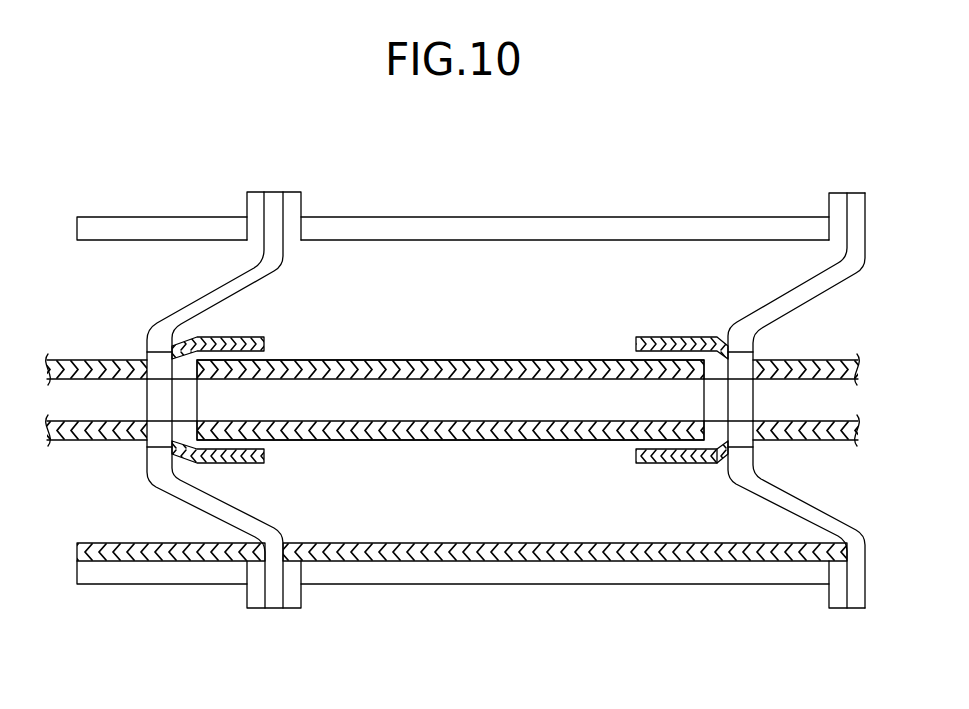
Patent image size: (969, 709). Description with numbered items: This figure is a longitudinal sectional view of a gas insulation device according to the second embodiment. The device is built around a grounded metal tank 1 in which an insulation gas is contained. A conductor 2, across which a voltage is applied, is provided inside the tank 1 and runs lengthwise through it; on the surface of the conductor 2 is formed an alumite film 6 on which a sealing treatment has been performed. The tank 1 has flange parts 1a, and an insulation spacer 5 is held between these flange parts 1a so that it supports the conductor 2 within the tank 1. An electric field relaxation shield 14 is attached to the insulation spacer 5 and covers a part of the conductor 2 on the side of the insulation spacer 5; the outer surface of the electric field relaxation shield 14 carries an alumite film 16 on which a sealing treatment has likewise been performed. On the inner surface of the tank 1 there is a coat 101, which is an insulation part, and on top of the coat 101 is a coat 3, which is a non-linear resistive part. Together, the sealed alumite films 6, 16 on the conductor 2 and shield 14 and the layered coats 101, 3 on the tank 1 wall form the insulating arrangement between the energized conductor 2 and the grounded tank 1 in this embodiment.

The grounded metal tank 1 is at (516, 228).
The flange part 1a is at (293, 191).
The conductor 2 is at (584, 374).
The coat 3 is at (616, 548).
The insulation spacer 5 is at (275, 537).
The alumite film 6 is at (519, 361).
The electric field relaxation shield 14 is at (650, 464).
The alumite film 16 is at (692, 464).
The coat 101 is at (679, 557).